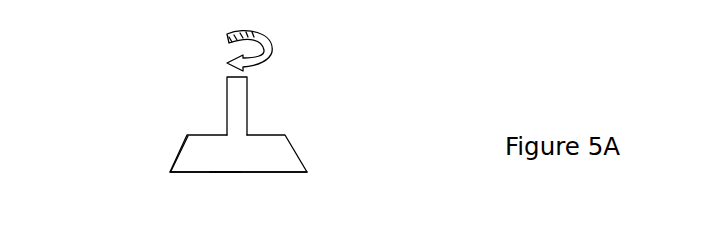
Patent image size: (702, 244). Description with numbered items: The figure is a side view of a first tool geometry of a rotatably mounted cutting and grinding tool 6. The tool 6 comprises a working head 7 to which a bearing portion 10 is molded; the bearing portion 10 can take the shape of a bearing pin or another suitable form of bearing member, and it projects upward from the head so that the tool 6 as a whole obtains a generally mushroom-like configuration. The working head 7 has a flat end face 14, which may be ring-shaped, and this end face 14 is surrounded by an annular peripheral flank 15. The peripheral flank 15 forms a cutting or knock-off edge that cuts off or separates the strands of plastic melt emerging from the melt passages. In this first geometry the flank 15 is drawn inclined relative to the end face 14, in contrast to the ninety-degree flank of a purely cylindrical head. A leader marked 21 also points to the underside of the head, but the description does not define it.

The cutting and grinding tool 6 is at (209, 137).
The bearing portion 10 is at (242, 103).
The annular peripheral flank 15 is at (293, 152).
The working head 7 is at (202, 158).
The flat end face 14 is at (253, 176).
The contact surface 21 is at (223, 178).